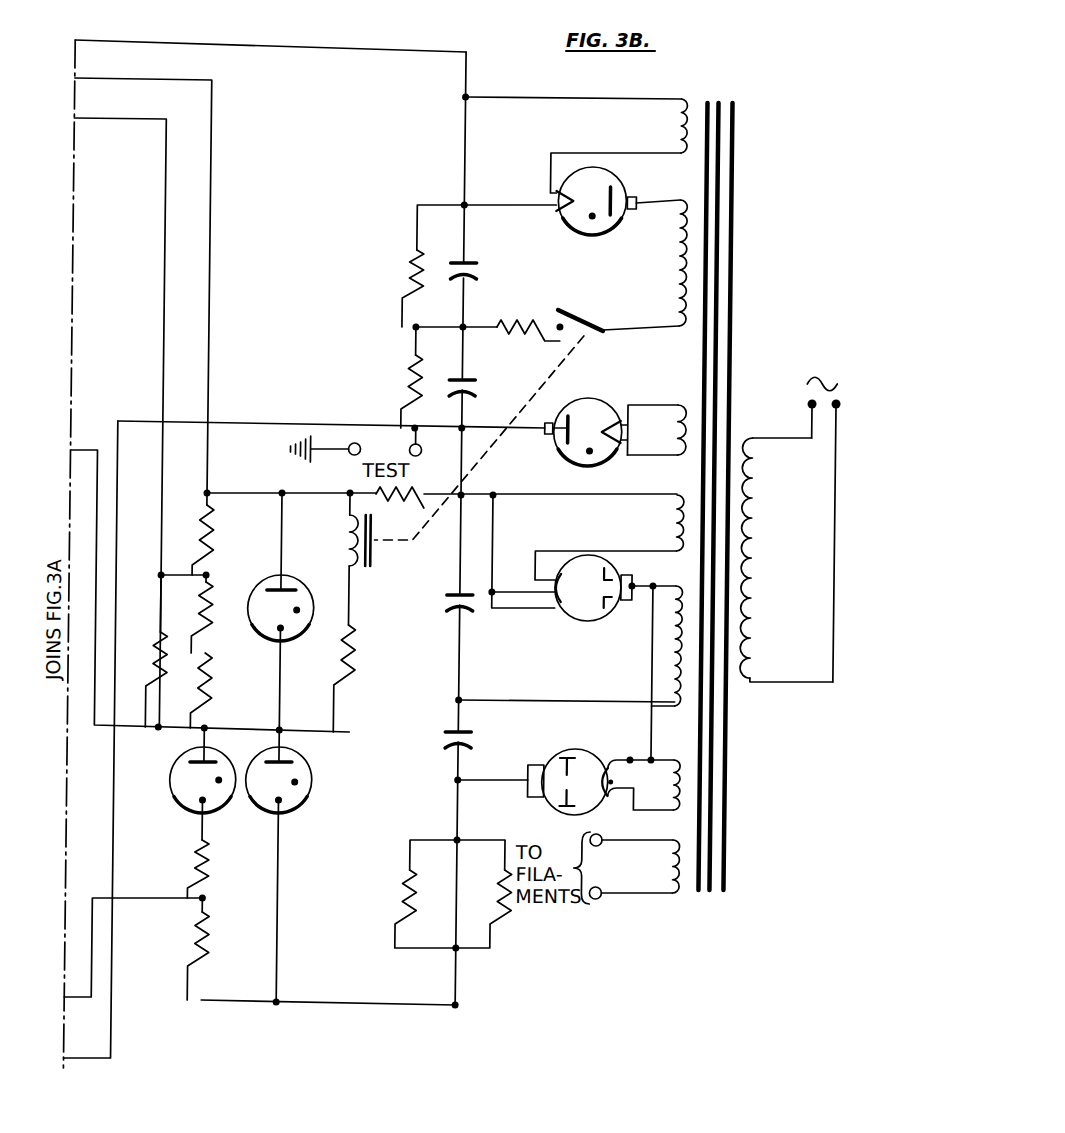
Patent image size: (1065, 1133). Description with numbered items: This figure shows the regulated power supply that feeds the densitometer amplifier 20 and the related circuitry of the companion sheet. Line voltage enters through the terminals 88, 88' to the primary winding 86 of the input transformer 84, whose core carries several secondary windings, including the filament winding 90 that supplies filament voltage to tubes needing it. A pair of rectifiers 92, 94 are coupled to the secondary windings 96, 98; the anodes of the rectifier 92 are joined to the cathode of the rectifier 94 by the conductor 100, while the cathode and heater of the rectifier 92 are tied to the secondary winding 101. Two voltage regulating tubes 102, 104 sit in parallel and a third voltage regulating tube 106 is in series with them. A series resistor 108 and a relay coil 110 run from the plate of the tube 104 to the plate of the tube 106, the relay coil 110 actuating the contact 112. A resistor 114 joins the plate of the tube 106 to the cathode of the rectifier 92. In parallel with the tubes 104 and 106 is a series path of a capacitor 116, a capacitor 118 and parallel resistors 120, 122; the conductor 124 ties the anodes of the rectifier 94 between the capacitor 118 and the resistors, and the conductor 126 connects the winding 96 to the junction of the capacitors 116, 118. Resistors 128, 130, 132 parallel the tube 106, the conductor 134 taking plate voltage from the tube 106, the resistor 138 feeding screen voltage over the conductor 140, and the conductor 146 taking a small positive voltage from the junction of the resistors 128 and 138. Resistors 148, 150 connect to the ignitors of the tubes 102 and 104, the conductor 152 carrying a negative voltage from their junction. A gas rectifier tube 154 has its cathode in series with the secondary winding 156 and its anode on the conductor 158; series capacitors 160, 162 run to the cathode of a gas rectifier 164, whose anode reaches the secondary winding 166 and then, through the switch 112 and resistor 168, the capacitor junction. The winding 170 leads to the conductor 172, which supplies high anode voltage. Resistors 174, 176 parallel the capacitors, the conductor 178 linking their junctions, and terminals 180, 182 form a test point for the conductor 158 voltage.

The densitometer amplifier 20 is at (486, 76).
The input transformer 84 is at (745, 167).
The primary winding 86 is at (746, 566).
The terminal 88 is at (799, 407).
The terminal 88' is at (818, 541).
The filament winding 90 is at (682, 877).
The rectifier 92 is at (584, 620).
The rectifier 94 is at (590, 752).
The secondary winding 96 is at (666, 652).
The secondary winding 98 is at (683, 800).
The conductor 100 is at (654, 683).
The secondary winding 101 is at (677, 526).
The voltage regulating tube 102 is at (182, 804).
The voltage regulating tube 104 is at (312, 788).
The voltage regulating tube 106 is at (287, 644).
The series resistor 108 is at (354, 654).
The relay coil 110 is at (349, 539).
The contact 112 is at (585, 318).
The resistor 114 is at (400, 500).
The capacitor 116 is at (447, 599).
The capacitor 118 is at (443, 750).
The resistor 120 is at (410, 902).
The resistor 122 is at (502, 904).
The conductor 124 is at (492, 780).
The conductor 126 is at (486, 700).
The resistor 128 is at (208, 689).
The resistor 130 is at (214, 622).
The resistor 132 is at (211, 527).
The conductor 134 is at (95, 78).
The resistor 138 is at (185, 653).
The conductor 140 is at (140, 119).
The conductor 146 is at (94, 451).
The resistor 148 is at (210, 868).
The resistor 150 is at (210, 952).
The conductor 152 is at (97, 970).
The gas rectifier tube 154 is at (590, 398).
The secondary winding 156 is at (683, 406).
The conductor 158 is at (119, 421).
The capacitor 160 is at (476, 380).
The capacitor 162 is at (478, 274).
The gas rectifier 164 is at (566, 228).
The secondary winding 166 is at (677, 272).
The resistor 168 is at (529, 317).
The secondary winding 170 is at (673, 126).
The conductor 172 is at (145, 42).
The resistor 174 is at (412, 271).
The resistor 176 is at (412, 382).
The conductor 178 is at (441, 327).
The terminal 180 is at (416, 456).
The terminal 182 is at (350, 456).